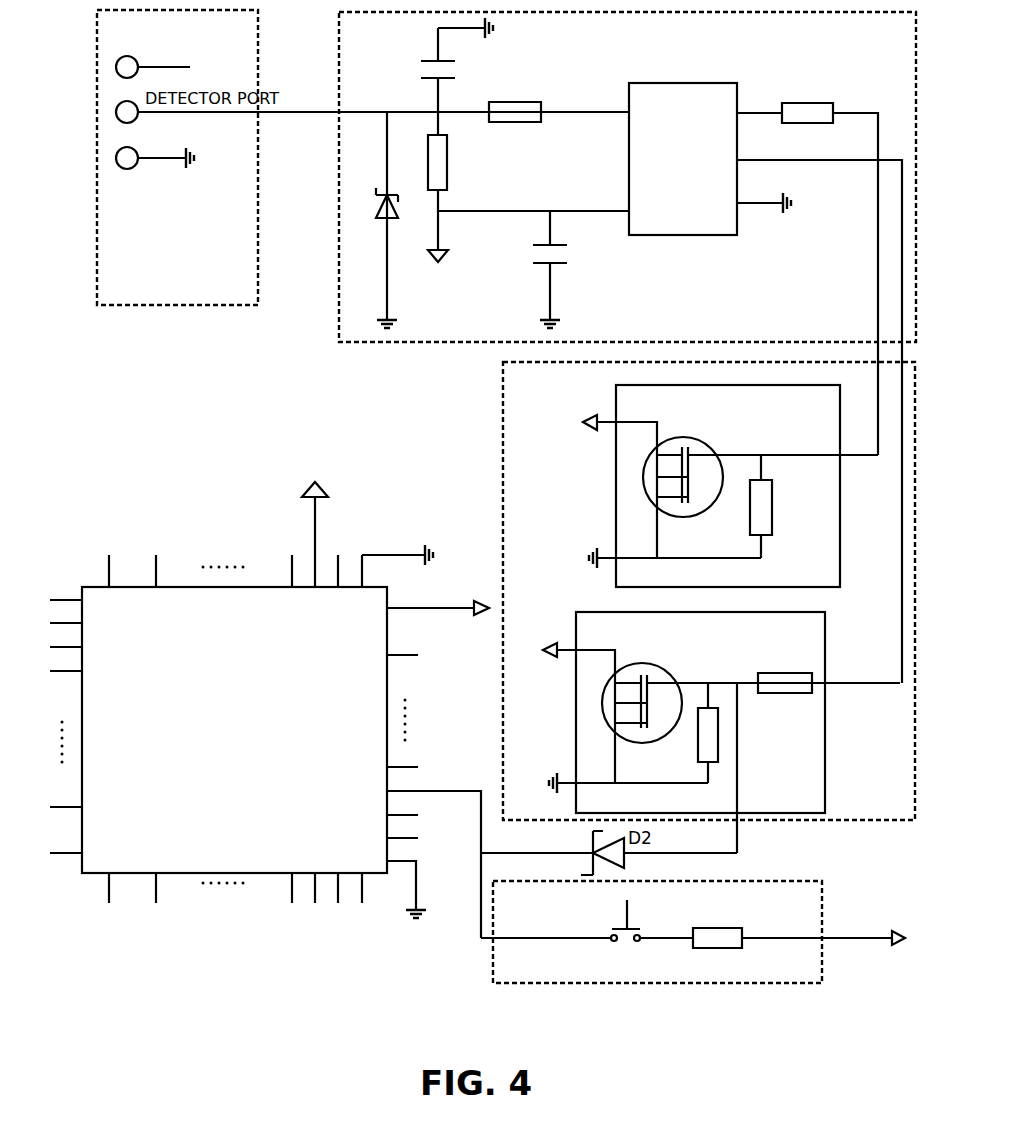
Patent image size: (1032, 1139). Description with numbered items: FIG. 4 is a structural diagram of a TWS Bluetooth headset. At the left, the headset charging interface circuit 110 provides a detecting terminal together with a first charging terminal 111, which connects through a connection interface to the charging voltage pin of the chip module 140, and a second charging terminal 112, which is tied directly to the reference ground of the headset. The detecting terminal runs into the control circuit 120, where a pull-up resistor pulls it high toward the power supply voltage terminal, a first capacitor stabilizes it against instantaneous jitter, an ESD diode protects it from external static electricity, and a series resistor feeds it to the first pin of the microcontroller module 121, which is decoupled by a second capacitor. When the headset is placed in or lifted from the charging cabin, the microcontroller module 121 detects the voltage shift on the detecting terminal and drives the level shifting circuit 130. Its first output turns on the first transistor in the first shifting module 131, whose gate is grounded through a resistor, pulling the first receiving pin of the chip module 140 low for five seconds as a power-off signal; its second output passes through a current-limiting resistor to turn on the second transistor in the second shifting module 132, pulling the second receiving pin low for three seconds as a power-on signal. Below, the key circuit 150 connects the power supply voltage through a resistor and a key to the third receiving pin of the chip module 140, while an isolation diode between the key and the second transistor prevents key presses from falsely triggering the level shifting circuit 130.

The headset charging interface circuit 110 is at (97, 302).
The first charging terminal 111 is at (116, 67).
The second charging terminal 112 is at (116, 158).
The control circuit 120 is at (339, 342).
The microcontroller module 121 is at (678, 235).
The level shifting circuit 130 is at (503, 392).
The first shifting module 131 is at (885, 540).
The second shifting module 132 is at (825, 762).
The chip module 140 is at (82, 587).
The key circuit 150 is at (822, 881).